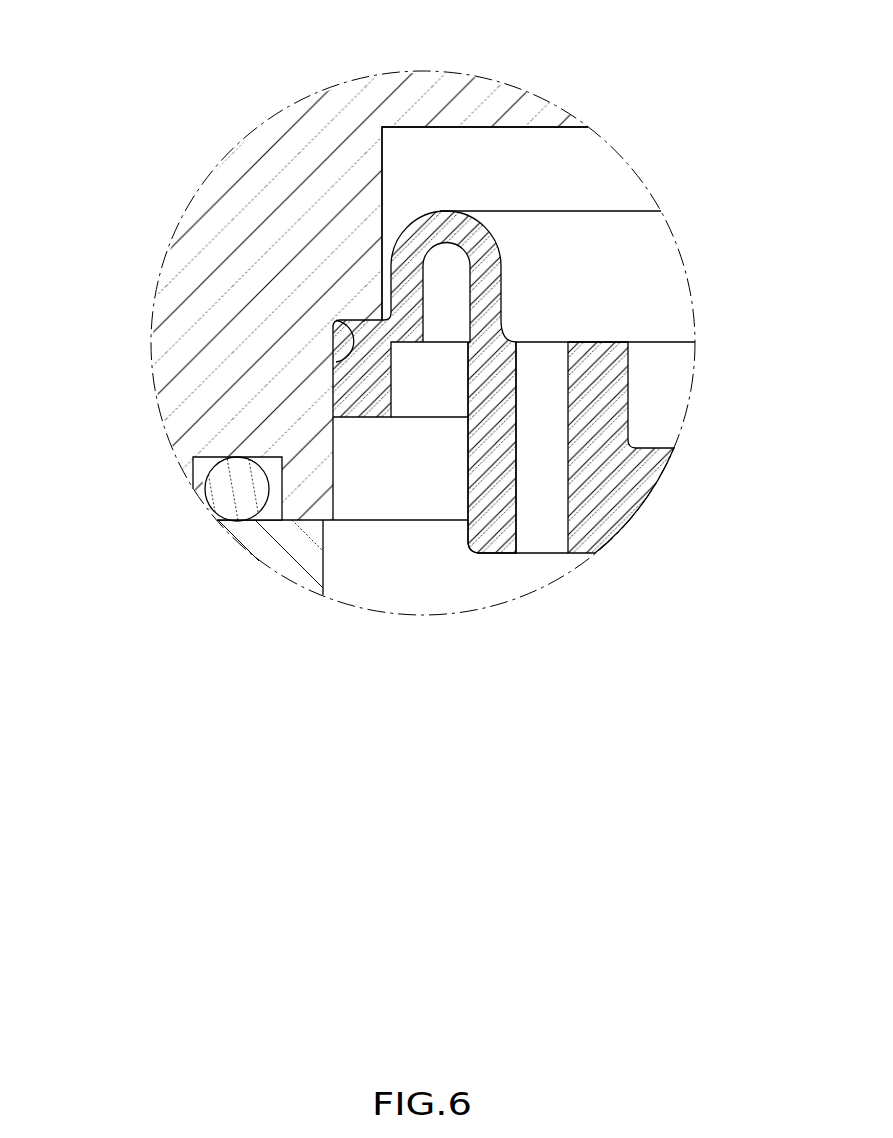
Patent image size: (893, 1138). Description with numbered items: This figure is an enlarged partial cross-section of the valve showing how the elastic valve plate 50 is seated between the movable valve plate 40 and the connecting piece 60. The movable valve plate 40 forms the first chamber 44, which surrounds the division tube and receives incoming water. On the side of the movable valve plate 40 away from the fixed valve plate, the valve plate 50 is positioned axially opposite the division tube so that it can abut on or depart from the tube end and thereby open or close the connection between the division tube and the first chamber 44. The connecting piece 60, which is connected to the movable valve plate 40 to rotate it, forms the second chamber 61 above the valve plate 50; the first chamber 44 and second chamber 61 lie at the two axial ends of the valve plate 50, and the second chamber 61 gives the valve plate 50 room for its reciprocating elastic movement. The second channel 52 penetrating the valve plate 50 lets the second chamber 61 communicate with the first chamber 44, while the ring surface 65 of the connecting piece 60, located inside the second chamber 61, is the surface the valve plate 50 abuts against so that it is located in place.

The movable valve plate 40 is at (282, 541).
The first chamber 44 is at (325, 565).
The valve plate 50 is at (607, 342).
The second channel 52 is at (515, 490).
The connecting piece 60 is at (193, 340).
The second chamber 61 is at (382, 172).
The ring surface 65 is at (337, 362).